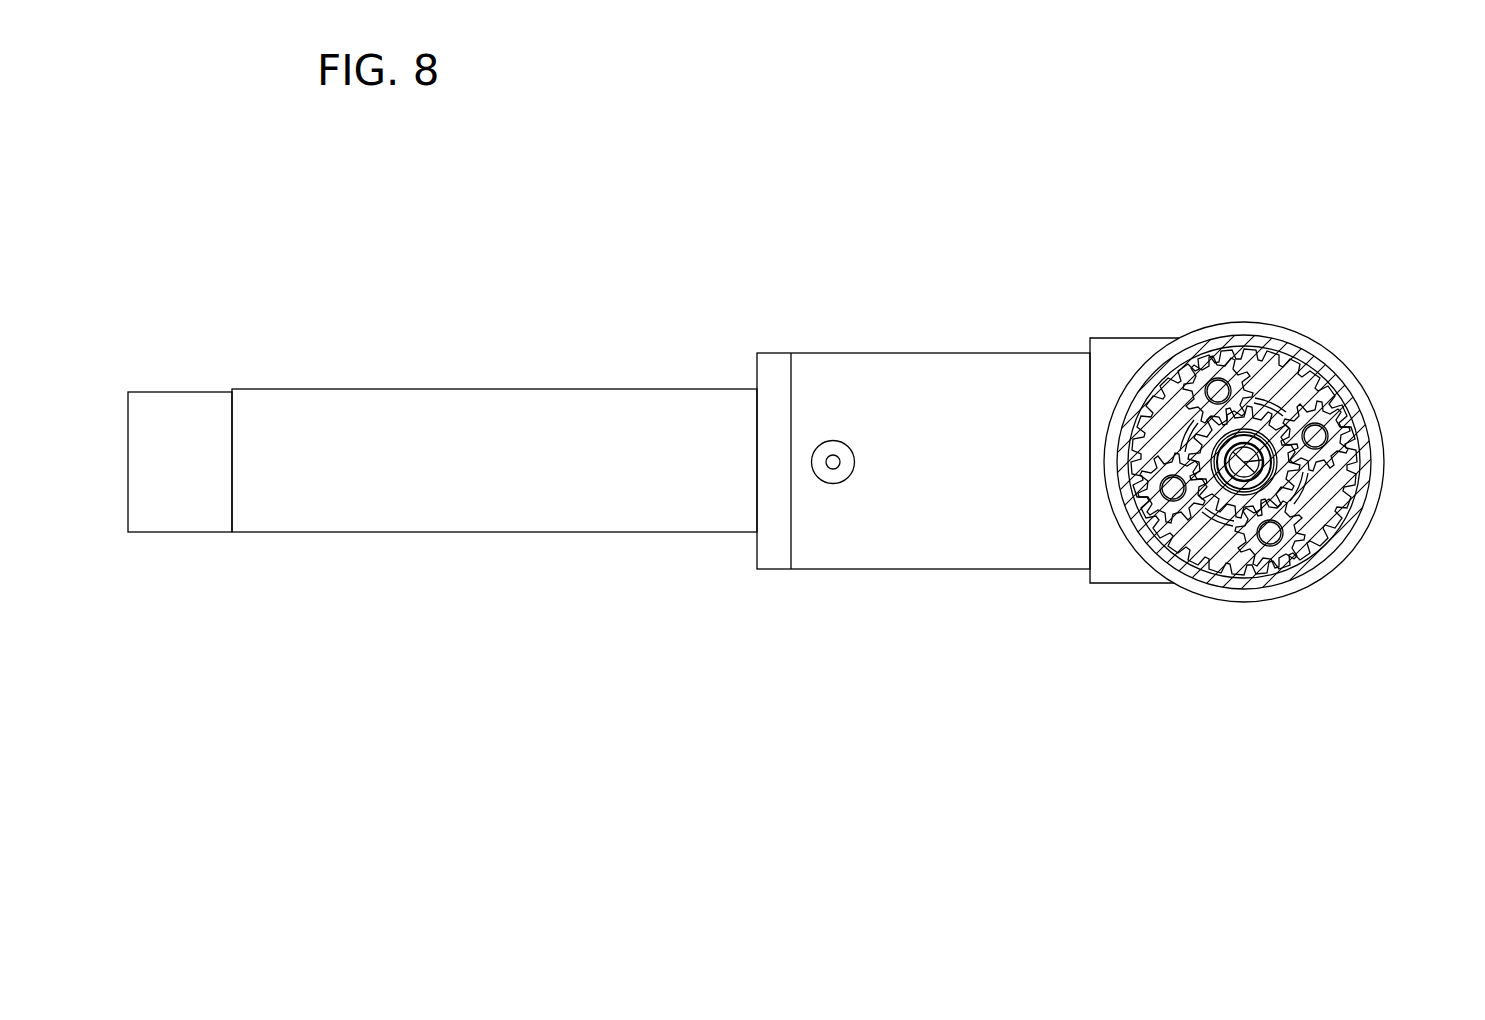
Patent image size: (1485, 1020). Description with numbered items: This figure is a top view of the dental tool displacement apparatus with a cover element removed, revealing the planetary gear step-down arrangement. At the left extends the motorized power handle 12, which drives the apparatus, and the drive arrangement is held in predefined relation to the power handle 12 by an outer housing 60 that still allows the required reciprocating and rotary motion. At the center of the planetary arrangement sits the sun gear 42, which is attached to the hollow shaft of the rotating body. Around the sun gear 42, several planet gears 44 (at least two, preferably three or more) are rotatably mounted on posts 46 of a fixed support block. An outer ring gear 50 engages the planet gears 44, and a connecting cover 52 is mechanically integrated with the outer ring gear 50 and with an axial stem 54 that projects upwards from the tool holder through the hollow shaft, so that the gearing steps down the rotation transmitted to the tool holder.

The motorized power handle 12 is at (462, 458).
The sun gear 42 is at (1268, 395).
The planet gears 44 is at (1205, 356).
The posts 46 is at (1316, 435).
The outer ring gear 50 is at (1200, 577).
The connecting cover 52 is at (1297, 570).
The axial stem 54 is at (1305, 470).
The outer housing 60 is at (1128, 563).